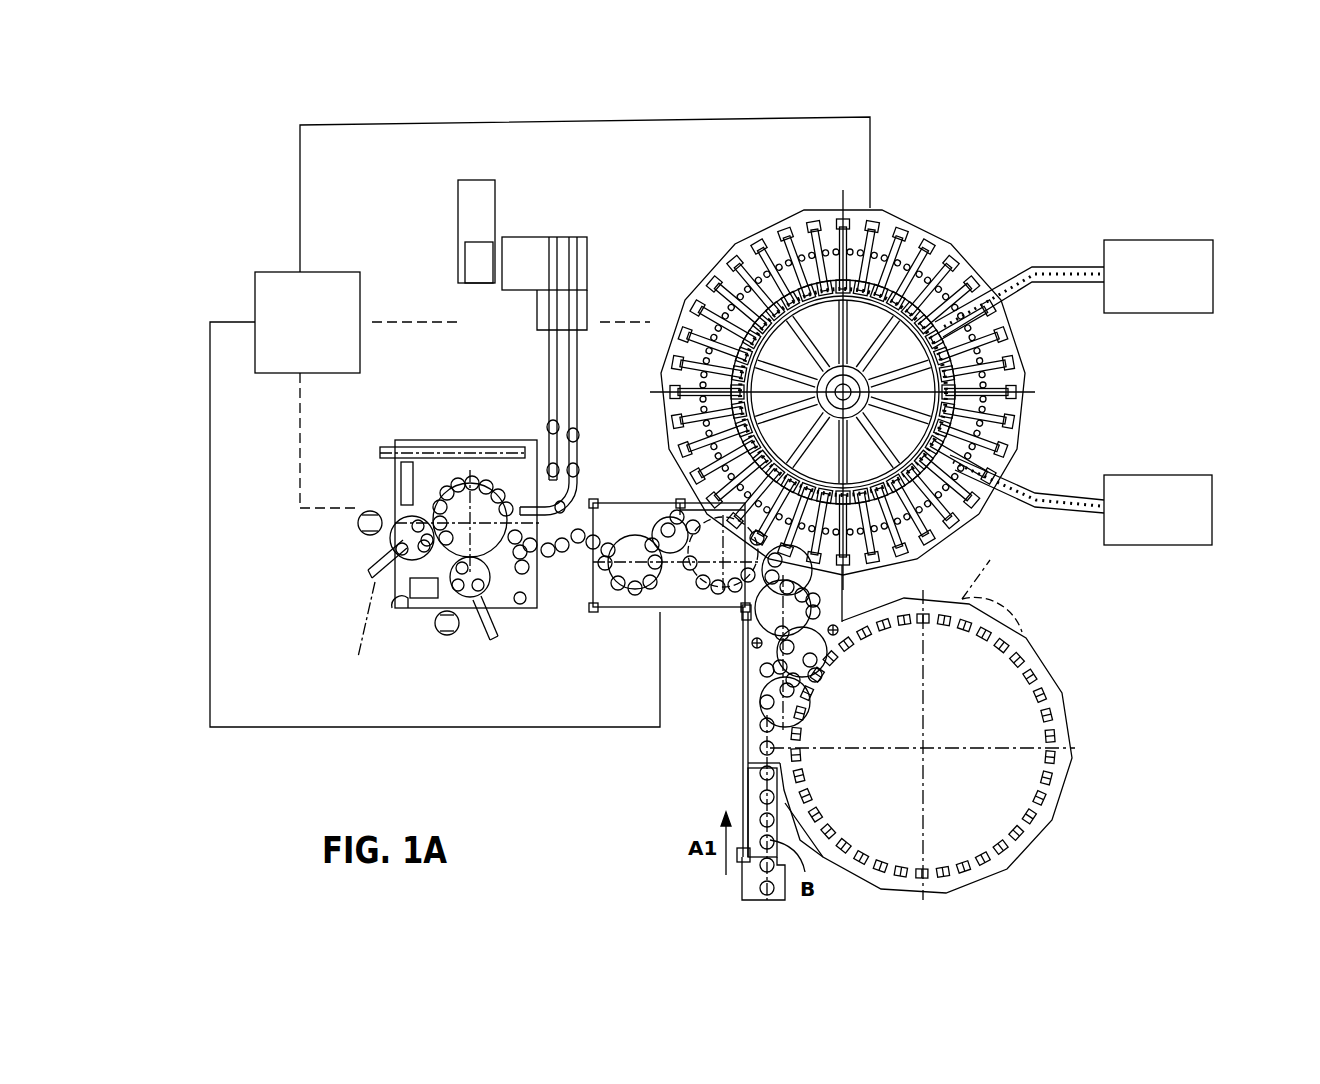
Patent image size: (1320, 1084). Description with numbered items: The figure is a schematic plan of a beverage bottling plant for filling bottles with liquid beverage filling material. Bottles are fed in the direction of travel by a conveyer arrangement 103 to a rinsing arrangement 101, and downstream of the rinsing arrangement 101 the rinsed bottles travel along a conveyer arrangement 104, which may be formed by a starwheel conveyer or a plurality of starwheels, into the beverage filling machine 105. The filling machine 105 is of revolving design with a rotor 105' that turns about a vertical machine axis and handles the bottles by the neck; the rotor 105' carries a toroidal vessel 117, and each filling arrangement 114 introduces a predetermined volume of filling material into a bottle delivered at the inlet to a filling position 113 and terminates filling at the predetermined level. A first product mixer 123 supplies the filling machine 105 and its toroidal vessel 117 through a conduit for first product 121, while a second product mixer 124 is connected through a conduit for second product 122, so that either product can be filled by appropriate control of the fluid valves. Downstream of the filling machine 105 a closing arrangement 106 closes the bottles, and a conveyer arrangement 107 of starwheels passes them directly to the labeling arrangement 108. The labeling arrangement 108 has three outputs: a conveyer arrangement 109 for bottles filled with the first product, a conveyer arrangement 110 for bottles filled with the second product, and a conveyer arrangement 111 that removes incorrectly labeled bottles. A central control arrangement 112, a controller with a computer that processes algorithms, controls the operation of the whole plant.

The rinsing arrangement 101 is at (1082, 646).
The conveyer arrangement to feed bottles to rinsing arrangement 103 is at (778, 825).
The conveyer arrangement to pass bottles to filling machine 104 is at (756, 675).
The beverage filling machine 105 is at (897, 390).
The rotor 105' is at (843, 374).
The closing arrangement 106 is at (652, 490).
The conveyer arrangement to pass bottles to labeling arrangement 107 is at (604, 626).
The labeling arrangement 108 is at (423, 650).
The conveyer arrangement to convey first product bottles 109 is at (578, 418).
The conveyer arrangement to convey second product bottles 110 is at (549, 362).
The conveyer arrangement to convey incorrectly labeled bottles 111 is at (432, 447).
The central control arrangement 112 is at (327, 342).
The filling position 113 is at (1014, 325).
The filling arrangement 114 is at (1000, 418).
The toroidal vessel 117 is at (957, 534).
The conduit for first product 121 is at (1055, 262).
The conduit for second product 122 is at (1057, 493).
The first product mixer 123 is at (1205, 287).
The second product mixer 124 is at (1205, 520).